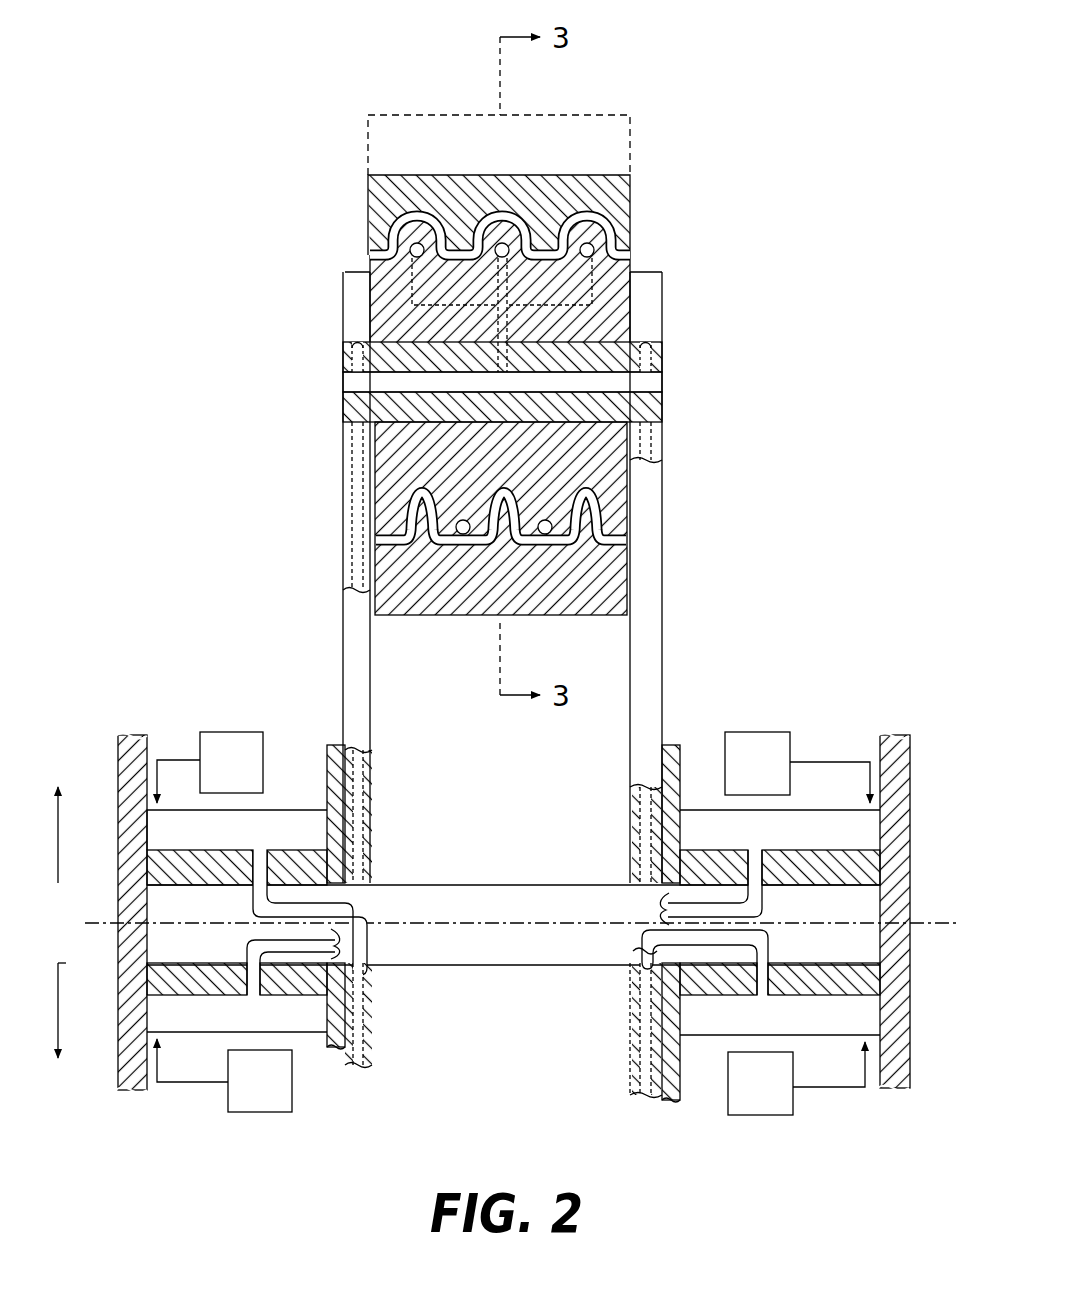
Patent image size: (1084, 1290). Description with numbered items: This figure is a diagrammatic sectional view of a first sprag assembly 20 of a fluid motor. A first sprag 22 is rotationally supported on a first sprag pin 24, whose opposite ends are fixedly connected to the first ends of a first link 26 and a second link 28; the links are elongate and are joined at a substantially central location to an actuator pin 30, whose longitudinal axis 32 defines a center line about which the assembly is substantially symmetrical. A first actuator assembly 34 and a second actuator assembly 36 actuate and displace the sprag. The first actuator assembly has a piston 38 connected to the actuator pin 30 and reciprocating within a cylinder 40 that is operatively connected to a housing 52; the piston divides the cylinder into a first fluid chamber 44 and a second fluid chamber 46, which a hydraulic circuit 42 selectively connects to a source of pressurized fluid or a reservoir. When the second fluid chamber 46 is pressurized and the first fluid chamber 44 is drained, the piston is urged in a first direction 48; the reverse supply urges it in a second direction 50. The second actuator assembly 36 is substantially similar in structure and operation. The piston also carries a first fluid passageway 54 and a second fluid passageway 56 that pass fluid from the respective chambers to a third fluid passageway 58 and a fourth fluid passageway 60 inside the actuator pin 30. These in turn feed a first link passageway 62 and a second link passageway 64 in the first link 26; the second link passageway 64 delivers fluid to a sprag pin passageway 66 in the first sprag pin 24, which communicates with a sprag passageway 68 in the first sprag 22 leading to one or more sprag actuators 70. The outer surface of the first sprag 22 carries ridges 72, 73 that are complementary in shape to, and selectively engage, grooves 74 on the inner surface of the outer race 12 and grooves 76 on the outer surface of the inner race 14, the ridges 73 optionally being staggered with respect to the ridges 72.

The outer race 12 is at (368, 214).
The inner race 14 is at (553, 612).
The first sprag assembly 20 is at (768, 188).
The first sprag 22 is at (650, 253).
The first sprag pin 24 is at (345, 353).
The first link 26 is at (345, 526).
The second link 28 is at (652, 581).
The actuator pin 30 is at (525, 883).
The longitudinal axis 32 is at (110, 921).
The first actuator assembly 34 is at (186, 672).
The second actuator assembly 36 is at (805, 663).
The piston 38 is at (168, 858).
The cylinder 40 is at (150, 829).
The hydraulic circuit 42 is at (235, 732).
The first fluid chamber 44 is at (233, 825).
The second fluid chamber 46 is at (201, 1012).
The first direction 48 is at (60, 810).
The second direction 50 is at (58, 1000).
The housing 52 is at (122, 1053).
The first fluid passageway 54 is at (265, 851).
The second fluid passageway 56 is at (258, 997).
The third fluid passageway 58 is at (253, 901).
The fourth fluid passageway 60 is at (247, 941).
The first link passageway 62 is at (372, 1016).
The second link passageway 64 is at (372, 813).
The sprag pin passageway 66 is at (652, 383).
The sprag passageway 68 is at (630, 283).
The sprag actuators 70 is at (578, 240).
The ridges 72 is at (606, 207).
The ridges 73 is at (622, 504).
The grooves 74 is at (388, 193).
The grooves 76 is at (625, 529).